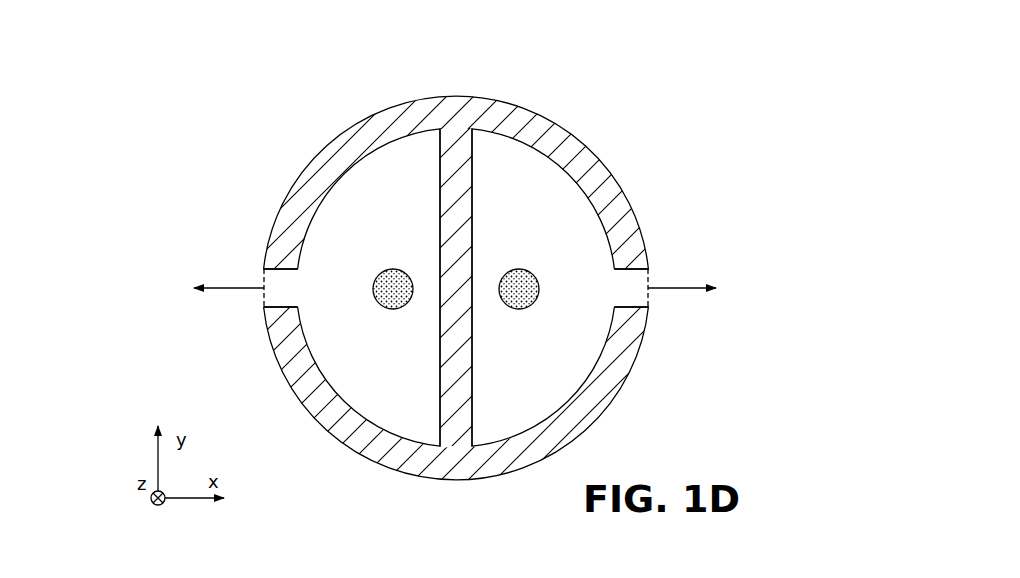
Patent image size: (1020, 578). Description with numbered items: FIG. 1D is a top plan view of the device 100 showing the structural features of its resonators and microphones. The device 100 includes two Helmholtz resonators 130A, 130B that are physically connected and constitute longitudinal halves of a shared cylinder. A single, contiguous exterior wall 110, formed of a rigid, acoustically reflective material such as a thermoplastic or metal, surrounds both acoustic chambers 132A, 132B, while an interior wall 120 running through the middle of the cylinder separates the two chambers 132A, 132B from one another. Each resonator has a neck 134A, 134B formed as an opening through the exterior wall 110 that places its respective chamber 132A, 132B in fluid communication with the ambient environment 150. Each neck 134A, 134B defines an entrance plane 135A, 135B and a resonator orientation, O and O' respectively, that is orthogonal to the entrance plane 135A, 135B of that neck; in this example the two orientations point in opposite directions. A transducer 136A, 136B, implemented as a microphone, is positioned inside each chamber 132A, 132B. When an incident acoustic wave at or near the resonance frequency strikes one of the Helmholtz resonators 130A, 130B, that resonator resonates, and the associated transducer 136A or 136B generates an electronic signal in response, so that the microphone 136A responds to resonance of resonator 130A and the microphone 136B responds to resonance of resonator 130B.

The device 100 is at (214, 84).
The exterior wall 110 is at (360, 122).
The interior wall 120 is at (462, 193).
The Helmholtz resonator 130A is at (116, 293).
The Helmholtz resonator 130B is at (807, 295).
The chamber 132A is at (356, 207).
The chamber 132B is at (582, 324).
The neck 134A is at (273, 272).
The neck 134B is at (630, 272).
The entrance plane 135A is at (258, 279).
The entrance plane 135B is at (655, 279).
The transducer 136A is at (378, 300).
The transducer 136B is at (527, 268).
The ambient environment 150 is at (745, 76).